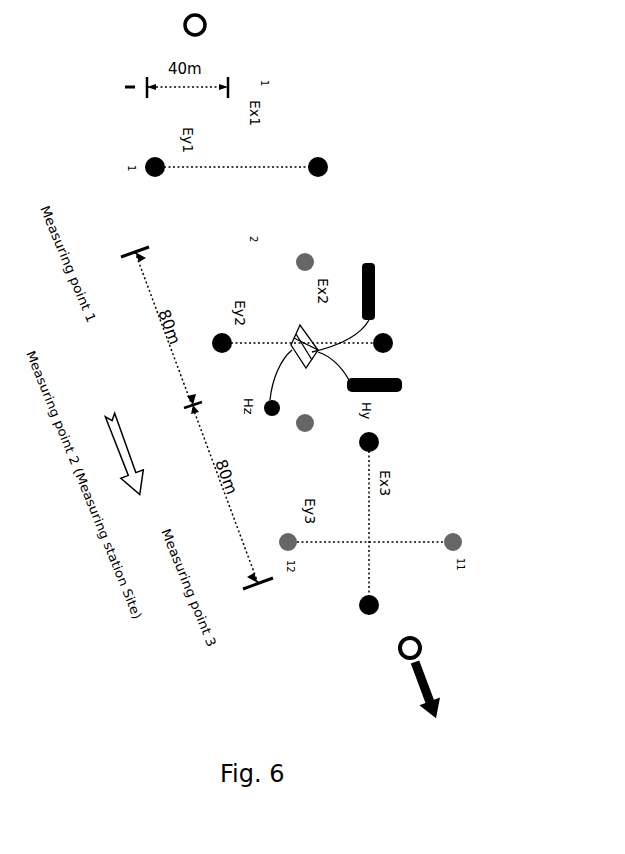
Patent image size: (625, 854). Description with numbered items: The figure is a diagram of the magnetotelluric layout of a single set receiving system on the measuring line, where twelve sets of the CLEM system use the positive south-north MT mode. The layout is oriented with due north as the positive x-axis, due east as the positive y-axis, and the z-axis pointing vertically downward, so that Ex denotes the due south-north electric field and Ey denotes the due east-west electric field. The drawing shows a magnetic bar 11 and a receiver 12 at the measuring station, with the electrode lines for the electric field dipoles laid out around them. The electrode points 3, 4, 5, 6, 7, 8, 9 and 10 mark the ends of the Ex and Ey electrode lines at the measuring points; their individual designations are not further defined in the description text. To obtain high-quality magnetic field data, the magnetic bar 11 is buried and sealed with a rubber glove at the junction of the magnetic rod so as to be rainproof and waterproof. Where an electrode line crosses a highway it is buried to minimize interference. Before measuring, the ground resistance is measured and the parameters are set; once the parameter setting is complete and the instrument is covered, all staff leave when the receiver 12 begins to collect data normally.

The measuring point electrode 3 is at (319, 172).
The measuring point electrode 4 is at (157, 172).
The measuring point electrode 5 is at (308, 261).
The measuring point electrode 6 is at (310, 422).
The measuring point electrode 7 is at (386, 348).
The measuring point electrode 8 is at (223, 348).
The measuring point electrode 9 is at (377, 444).
The measuring point electrode 10 is at (378, 608).
The magnetic bar 11 is at (368, 263).
The receiver 12 is at (308, 345).